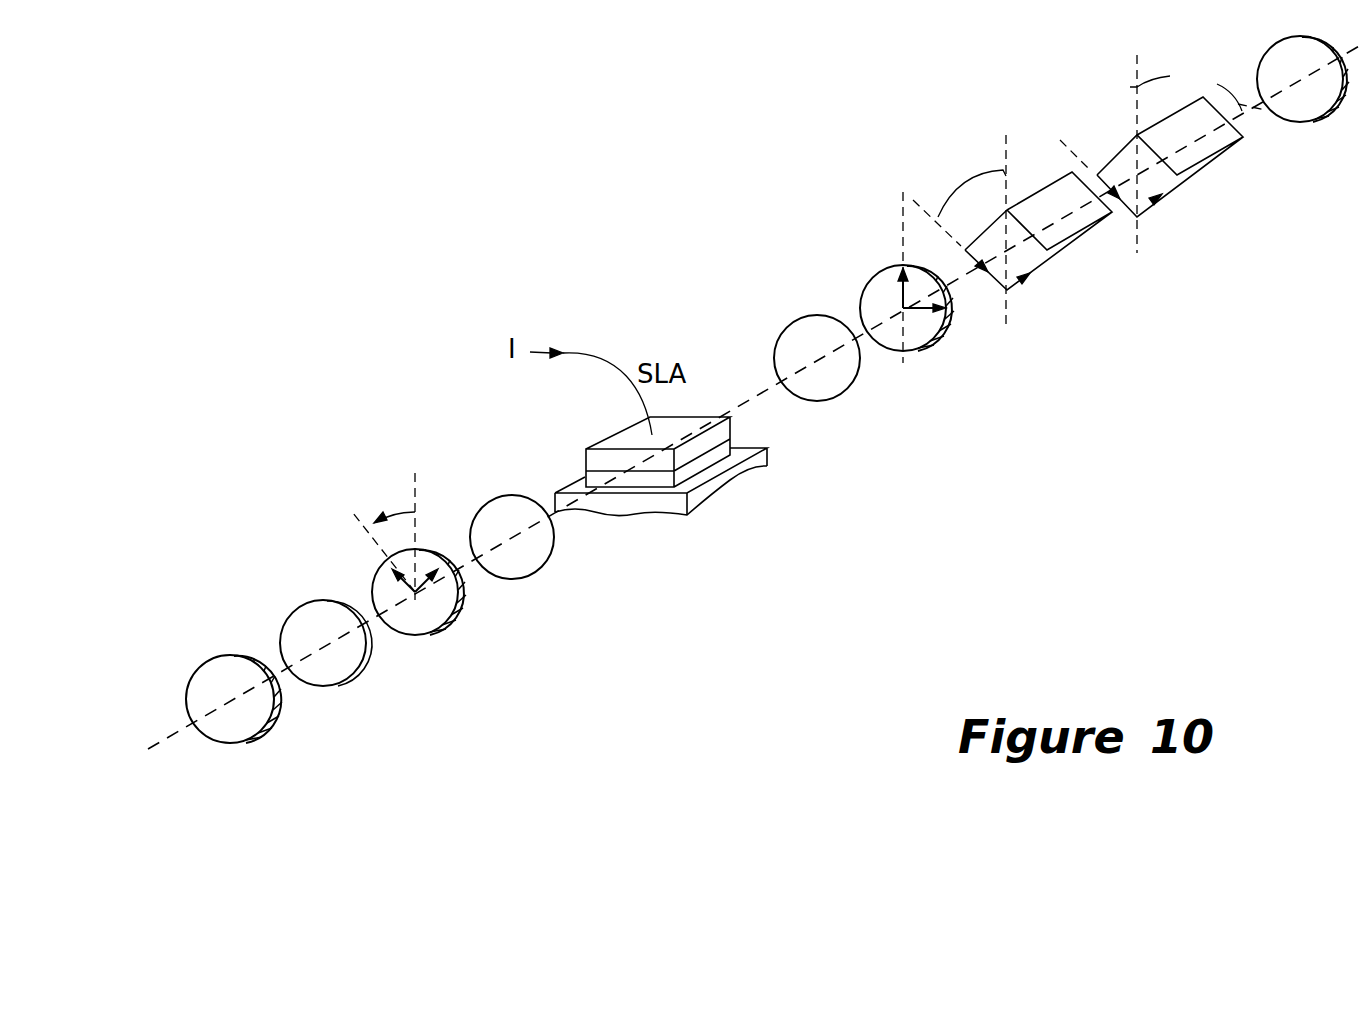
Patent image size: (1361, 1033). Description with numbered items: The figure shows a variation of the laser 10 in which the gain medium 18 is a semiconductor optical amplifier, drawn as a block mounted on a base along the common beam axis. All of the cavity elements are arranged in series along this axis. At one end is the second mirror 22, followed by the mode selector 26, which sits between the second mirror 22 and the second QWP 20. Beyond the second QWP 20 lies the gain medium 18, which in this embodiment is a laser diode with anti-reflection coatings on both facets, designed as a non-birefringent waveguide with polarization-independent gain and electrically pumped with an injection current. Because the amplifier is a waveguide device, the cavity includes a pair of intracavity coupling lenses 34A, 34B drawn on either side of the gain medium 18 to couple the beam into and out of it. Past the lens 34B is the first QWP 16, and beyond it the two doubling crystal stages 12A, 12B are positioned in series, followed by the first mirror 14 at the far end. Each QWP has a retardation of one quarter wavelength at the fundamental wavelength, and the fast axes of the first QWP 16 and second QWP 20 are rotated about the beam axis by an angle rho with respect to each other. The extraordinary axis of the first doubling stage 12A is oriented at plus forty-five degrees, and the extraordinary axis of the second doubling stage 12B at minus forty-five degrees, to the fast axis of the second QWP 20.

The laser 10 is at (93, 113).
The second mirror 22 is at (239, 709).
The mode selector 26 is at (329, 656).
The second QWP 20 is at (413, 551).
The lens 34A is at (512, 557).
The gain medium 18 is at (720, 499).
The lens 34B is at (817, 378).
The first QWP 16 is at (907, 272).
The first doubling crystal stage 12A is at (1012, 218).
The second doubling crystal stage 12B is at (1162, 141).
The first mirror 14 is at (1303, 96).